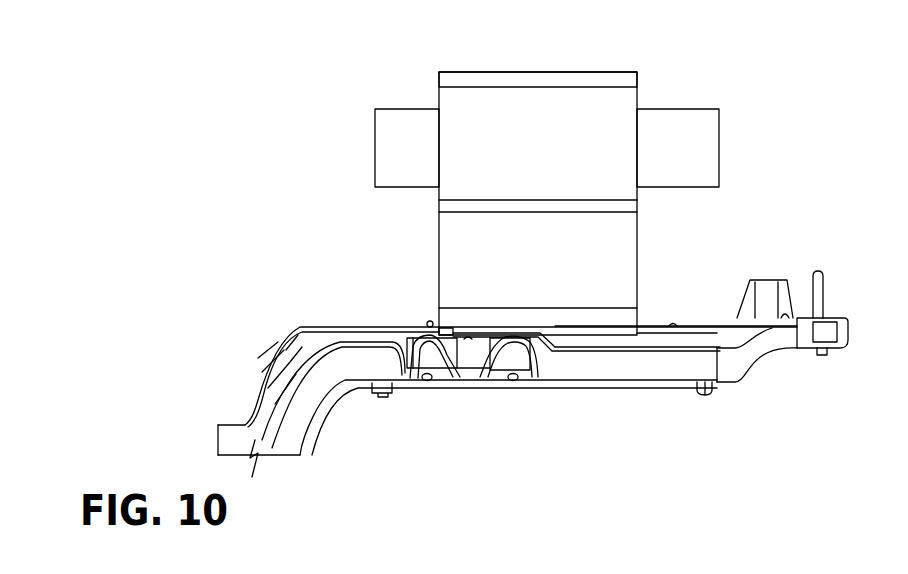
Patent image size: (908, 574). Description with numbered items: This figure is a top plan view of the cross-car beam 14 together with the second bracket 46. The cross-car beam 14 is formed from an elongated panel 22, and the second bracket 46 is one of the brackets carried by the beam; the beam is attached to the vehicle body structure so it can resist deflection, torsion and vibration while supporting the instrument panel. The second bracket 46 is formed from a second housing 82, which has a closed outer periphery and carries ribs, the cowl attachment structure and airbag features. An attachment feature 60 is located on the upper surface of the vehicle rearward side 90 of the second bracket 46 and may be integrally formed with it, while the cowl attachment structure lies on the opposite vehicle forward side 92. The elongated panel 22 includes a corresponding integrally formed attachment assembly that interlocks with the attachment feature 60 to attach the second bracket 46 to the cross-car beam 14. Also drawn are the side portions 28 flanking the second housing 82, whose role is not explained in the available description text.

The cross-car beam 14 is at (350, 402).
The elongated panel 22 is at (798, 317).
The flange 28 is at (402, 118).
The second bracket 46 is at (610, 112).
The attachment feature 60 is at (621, 358).
The second housing 82 is at (505, 163).
The vehicle rearward side 90 is at (566, 358).
The vehicle forward side 92 is at (572, 63).